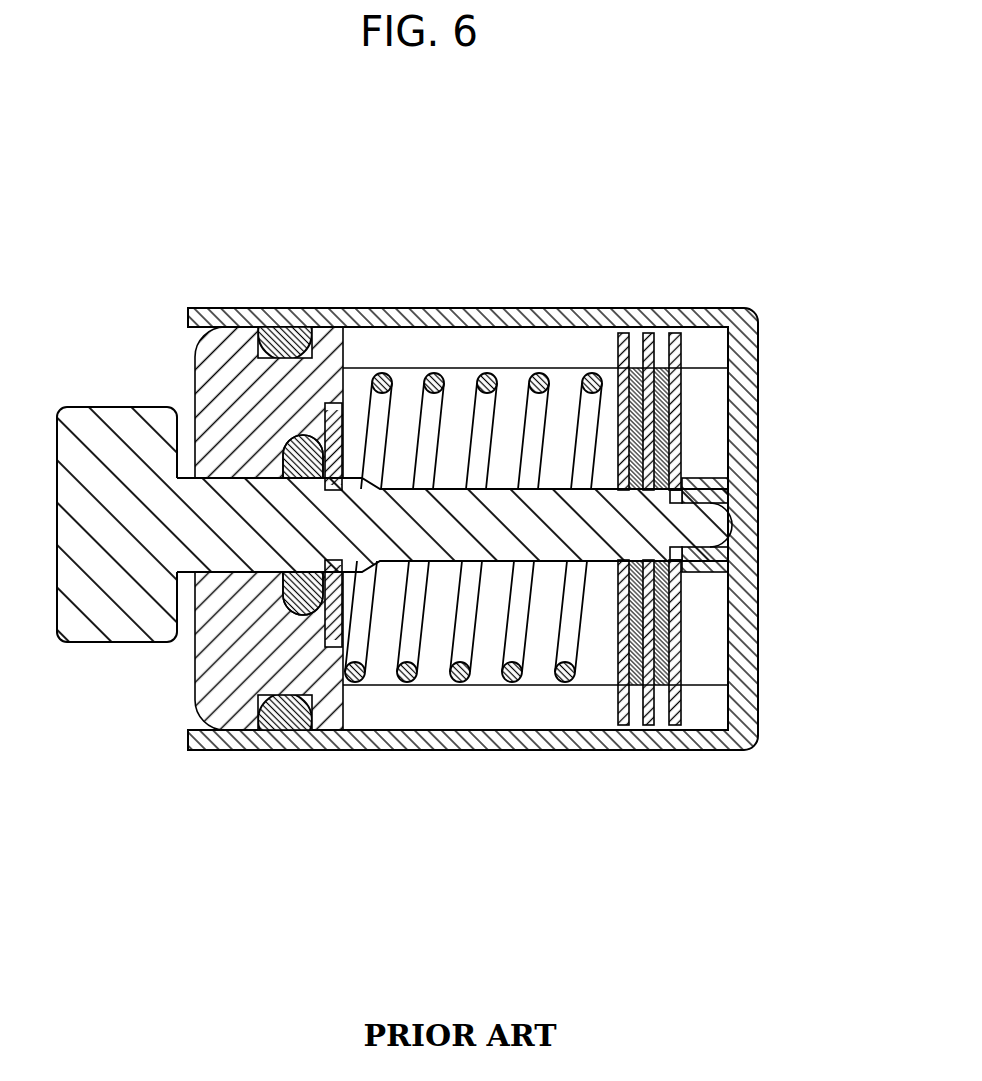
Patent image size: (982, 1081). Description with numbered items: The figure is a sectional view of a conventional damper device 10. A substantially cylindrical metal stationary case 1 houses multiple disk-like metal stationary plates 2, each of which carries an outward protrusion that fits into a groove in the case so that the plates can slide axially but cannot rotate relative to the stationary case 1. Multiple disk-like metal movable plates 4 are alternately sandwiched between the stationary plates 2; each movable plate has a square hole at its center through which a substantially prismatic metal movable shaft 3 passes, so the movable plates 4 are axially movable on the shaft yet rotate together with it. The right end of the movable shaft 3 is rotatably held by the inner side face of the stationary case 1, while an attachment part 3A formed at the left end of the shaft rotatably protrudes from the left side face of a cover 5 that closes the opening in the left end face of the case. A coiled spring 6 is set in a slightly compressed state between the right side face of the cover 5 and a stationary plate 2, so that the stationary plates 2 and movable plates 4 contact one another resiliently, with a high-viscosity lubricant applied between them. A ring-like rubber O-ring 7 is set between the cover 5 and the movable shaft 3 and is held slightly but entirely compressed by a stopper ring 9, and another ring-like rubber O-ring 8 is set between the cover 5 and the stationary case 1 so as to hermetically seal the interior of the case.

The stationary case 1 is at (737, 308).
The stationary plates 2 is at (625, 318).
The movable shaft 3 is at (403, 520).
The attachment part 3A is at (104, 420).
The movable plates 4 is at (660, 675).
The cover 5 is at (217, 362).
The coiled spring 6 is at (488, 375).
The O-ring 7 is at (292, 612).
The O-ring 8 is at (285, 332).
The stopper ring 9 is at (346, 687).
The damper device 10 is at (768, 732).